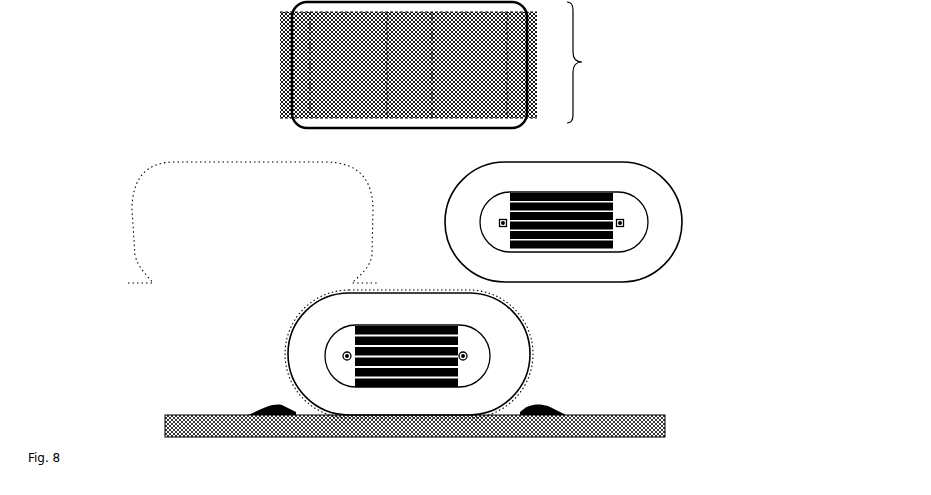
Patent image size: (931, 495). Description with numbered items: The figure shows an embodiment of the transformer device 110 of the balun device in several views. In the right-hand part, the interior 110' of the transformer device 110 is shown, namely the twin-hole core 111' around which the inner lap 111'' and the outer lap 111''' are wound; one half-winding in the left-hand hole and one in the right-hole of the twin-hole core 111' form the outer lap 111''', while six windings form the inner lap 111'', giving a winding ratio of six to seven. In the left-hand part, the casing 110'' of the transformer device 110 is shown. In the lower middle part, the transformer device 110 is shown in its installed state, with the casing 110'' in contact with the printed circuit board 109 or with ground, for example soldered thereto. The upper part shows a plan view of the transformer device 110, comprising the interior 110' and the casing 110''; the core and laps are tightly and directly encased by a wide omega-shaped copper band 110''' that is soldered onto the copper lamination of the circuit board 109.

The printed circuit board 109 is at (645, 422).
The transformer device 110 is at (454, 208).
The interior 110' is at (395, 268).
The casing 110'' is at (330, 288).
The cover layer 110''' is at (390, 65).
The twin-hole core 111' is at (563, 211).
The inner lap 111'' is at (561, 190).
The outer lap 111''' is at (578, 168).